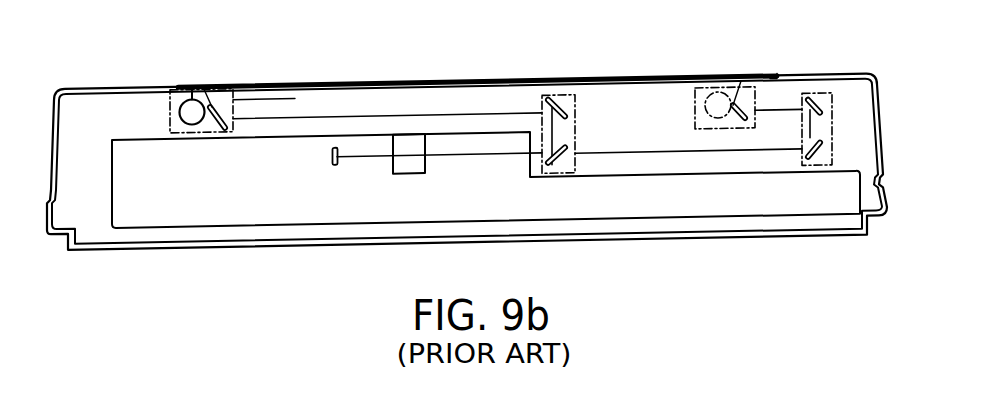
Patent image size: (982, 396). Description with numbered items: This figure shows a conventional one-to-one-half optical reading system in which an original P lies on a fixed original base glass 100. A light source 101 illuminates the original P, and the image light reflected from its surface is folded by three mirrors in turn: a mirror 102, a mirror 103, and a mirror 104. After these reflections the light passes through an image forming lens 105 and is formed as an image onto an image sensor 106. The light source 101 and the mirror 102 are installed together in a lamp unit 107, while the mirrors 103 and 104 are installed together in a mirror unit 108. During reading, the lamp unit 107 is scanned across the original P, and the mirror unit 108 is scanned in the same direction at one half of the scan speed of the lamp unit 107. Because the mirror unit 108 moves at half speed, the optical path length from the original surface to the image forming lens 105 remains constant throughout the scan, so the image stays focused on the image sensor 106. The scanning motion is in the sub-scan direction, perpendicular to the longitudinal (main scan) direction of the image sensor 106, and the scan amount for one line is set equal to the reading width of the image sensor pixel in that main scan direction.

The fixed original base glass 100 is at (451, 90).
The light source 101 is at (180, 93).
The mirror 102 is at (237, 103).
The mirror 103 is at (550, 106).
The mirror 104 is at (568, 157).
The image forming lens 105 is at (408, 181).
The image sensor 106 is at (335, 171).
The lamp unit 107 is at (177, 135).
The mirror unit 108 is at (548, 187).
The original P is at (720, 92).